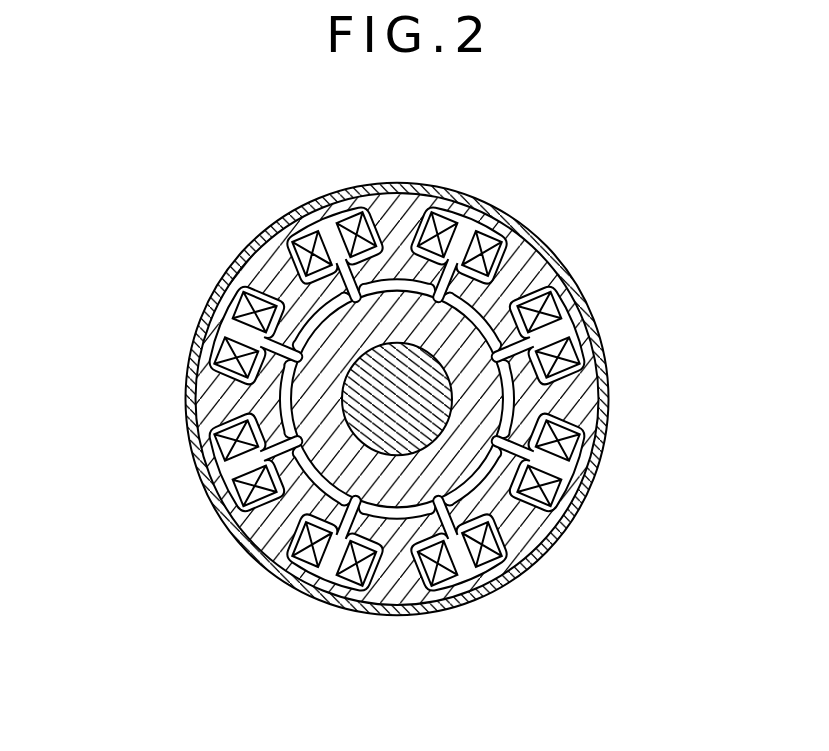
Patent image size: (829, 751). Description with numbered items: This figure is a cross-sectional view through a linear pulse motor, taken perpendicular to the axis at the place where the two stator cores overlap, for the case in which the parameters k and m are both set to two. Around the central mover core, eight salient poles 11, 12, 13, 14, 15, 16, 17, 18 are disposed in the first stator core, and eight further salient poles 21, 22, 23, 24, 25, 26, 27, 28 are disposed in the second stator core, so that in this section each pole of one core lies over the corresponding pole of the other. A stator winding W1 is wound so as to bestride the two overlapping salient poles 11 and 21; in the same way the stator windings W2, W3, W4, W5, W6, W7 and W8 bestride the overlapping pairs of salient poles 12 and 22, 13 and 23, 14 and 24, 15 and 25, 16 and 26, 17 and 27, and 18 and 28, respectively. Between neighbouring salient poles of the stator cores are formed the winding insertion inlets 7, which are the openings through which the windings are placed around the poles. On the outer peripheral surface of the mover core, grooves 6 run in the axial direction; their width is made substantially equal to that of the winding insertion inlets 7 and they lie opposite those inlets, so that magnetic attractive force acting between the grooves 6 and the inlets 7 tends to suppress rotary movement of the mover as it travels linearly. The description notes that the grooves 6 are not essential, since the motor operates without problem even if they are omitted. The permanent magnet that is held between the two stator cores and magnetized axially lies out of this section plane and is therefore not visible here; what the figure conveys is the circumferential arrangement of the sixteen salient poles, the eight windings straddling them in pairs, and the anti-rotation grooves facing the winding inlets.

The grooves 6 is at (330, 215).
The winding insertion inlets 7 is at (228, 313).
The salient pole 11 is at (400, 357).
The salient pole 12 is at (414, 375).
The salient pole 13 is at (440, 399).
The salient pole 14 is at (414, 375).
The salient pole 15 is at (400, 441).
The salient pole 16 is at (414, 375).
The salient pole 17 is at (355, 399).
The salient pole 18 is at (414, 375).
The salient pole 21 is at (405, 237).
The salient pole 22 is at (517, 283).
The salient pole 23 is at (567, 407).
The salient pole 24 is at (543, 563).
The salient pole 25 is at (388, 562).
The salient pole 26 is at (270, 511).
The salient pole 27 is at (228, 390).
The salient pole 28 is at (274, 258).
The stator winding W1 is at (370, 226).
The stator winding W2 is at (490, 238).
The stator winding W3 is at (563, 355).
The stator winding W4 is at (556, 488).
The stator winding W5 is at (443, 572).
The stator winding W6 is at (312, 551).
The stator winding W7 is at (228, 437).
The stator winding W8 is at (250, 306).